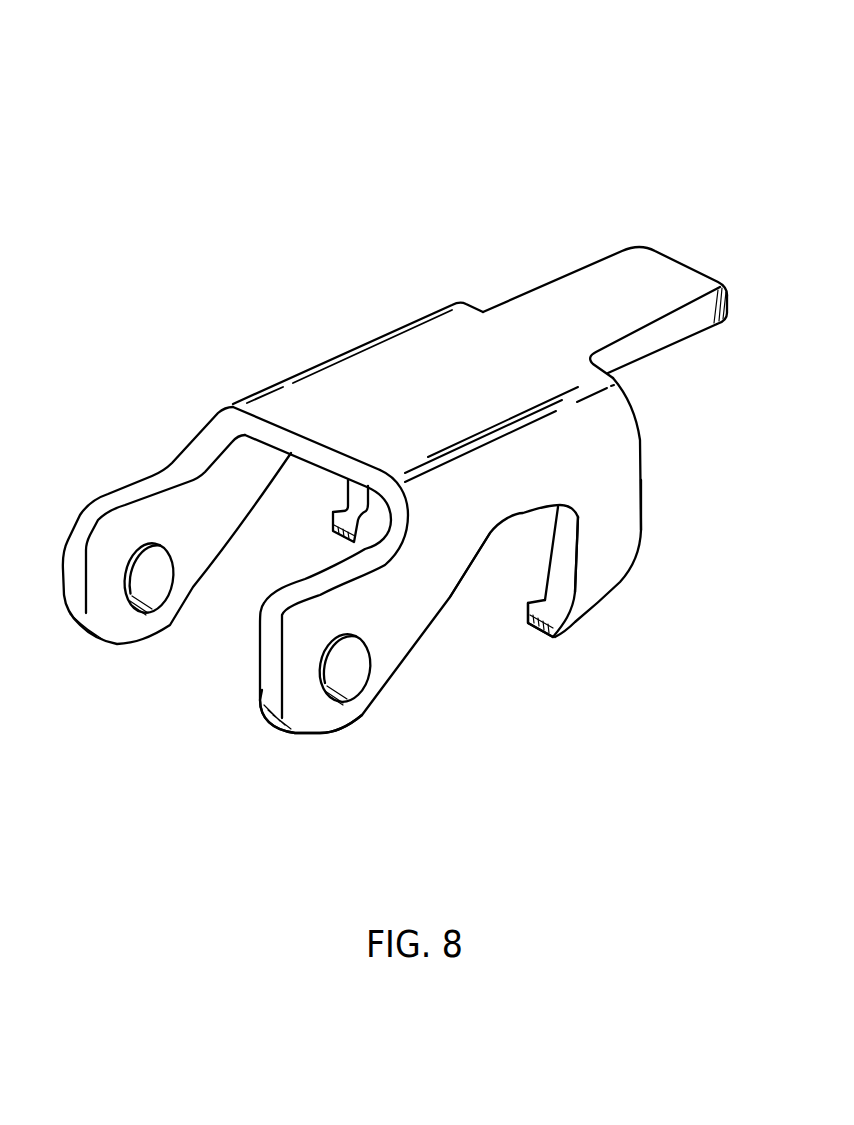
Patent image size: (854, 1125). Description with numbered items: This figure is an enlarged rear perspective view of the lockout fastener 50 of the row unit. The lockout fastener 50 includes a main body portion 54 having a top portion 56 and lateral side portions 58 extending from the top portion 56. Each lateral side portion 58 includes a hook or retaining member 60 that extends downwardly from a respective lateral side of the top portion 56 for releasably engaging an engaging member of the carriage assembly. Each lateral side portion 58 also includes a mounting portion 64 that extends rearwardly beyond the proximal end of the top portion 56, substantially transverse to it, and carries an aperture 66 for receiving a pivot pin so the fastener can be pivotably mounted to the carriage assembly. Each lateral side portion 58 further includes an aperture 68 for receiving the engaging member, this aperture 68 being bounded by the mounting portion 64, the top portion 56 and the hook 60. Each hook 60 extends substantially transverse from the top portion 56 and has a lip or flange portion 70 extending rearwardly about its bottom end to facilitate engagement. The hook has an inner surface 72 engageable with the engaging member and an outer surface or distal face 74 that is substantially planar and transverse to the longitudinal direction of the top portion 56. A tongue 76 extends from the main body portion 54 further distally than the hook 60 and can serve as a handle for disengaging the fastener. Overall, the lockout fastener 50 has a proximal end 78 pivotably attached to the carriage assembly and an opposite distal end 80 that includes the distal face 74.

The lockout fastener 50 is at (668, 123).
The main body portion 54 is at (341, 355).
The top portion 56 is at (466, 347).
The lateral side portions 58 is at (99, 408).
The hook or retaining member 60 is at (332, 522).
The mounting portion 64 is at (333, 738).
The aperture 66 is at (137, 580).
The aperture 68 is at (505, 601).
The lip or flange portion 70 is at (529, 627).
The inner surface 72 is at (563, 543).
The outer surface or distal face 74 is at (641, 462).
The tongue 76 is at (687, 265).
The proximal end 78 is at (307, 736).
The distal end 80 is at (658, 498).